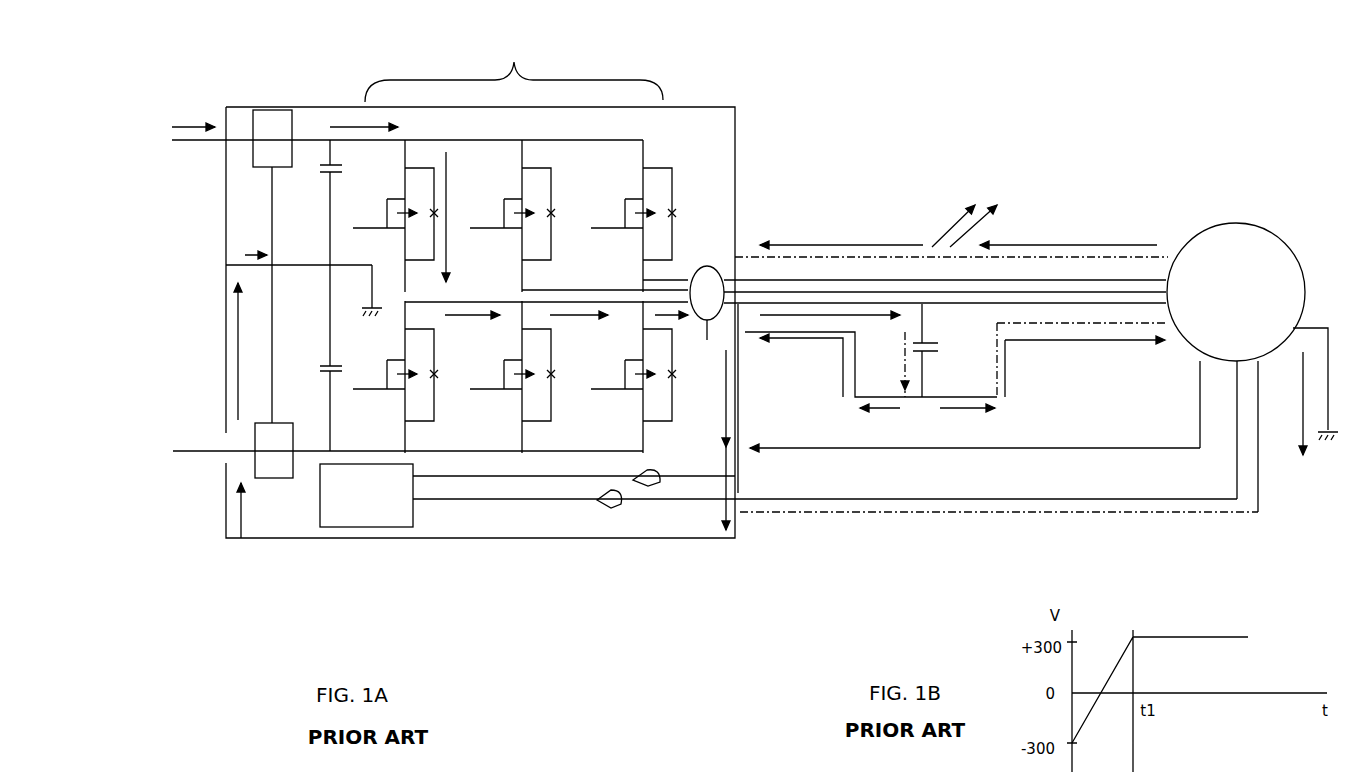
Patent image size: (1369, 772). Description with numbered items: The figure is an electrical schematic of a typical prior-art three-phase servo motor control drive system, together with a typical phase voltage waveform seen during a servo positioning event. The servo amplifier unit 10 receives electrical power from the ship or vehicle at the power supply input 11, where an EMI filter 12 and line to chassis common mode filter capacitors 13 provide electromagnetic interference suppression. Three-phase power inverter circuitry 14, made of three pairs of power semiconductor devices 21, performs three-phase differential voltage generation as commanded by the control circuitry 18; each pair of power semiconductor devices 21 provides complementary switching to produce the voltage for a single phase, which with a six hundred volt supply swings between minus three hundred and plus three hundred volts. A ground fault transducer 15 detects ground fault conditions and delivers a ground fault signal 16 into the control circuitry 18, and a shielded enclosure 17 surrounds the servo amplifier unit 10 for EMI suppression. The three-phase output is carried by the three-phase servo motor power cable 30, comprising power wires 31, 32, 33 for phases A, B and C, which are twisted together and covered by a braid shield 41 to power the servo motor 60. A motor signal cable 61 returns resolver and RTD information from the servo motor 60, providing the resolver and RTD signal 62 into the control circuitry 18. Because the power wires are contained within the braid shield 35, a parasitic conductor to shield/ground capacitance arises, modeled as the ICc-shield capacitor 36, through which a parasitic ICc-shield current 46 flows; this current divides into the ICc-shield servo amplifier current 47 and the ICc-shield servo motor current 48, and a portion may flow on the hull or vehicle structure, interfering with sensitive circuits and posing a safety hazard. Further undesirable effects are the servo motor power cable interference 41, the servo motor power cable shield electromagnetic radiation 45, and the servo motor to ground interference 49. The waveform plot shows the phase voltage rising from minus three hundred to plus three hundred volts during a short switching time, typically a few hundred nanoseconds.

The servo amplifier unit 10 is at (688, 92).
The power supply input 11 is at (177, 142).
The EMI filter 12 is at (278, 122).
The line to chassis common mode filter capacitors 13 is at (322, 162).
The three-phase power inverter circuitry 14 is at (520, 322).
The ground fault transducer 15 is at (708, 278).
The ground fault signal 16 is at (651, 480).
The shielded enclosure 17 is at (737, 140).
The control circuitry 18 is at (370, 510).
The power semiconductor devices 21 is at (415, 233).
The three-phase servo motor power cable 30 is at (1008, 112).
The power wire 31 is at (797, 303).
The power wire 32 is at (820, 292).
The power wire 33 is at (842, 280).
The braid shield 35 is at (1063, 258).
The ICc-shield capacitor 36 is at (936, 360).
The braid shield / servo motor power cable interference 41 is at (900, 245).
The servo motor power cable shield electromagnetic radiation 45 is at (950, 196).
The parasitic ICc-shield current 46 is at (905, 357).
The ICc-shield servo amplifier current 47 is at (873, 410).
The ICc-shield servo motor current 48 is at (1005, 373).
The servo motor to ground interference 49 is at (1303, 430).
The servo motor 60 is at (1258, 225).
The motor signal cable 61 is at (1195, 502).
The resolver and RTD signal 62 is at (617, 500).